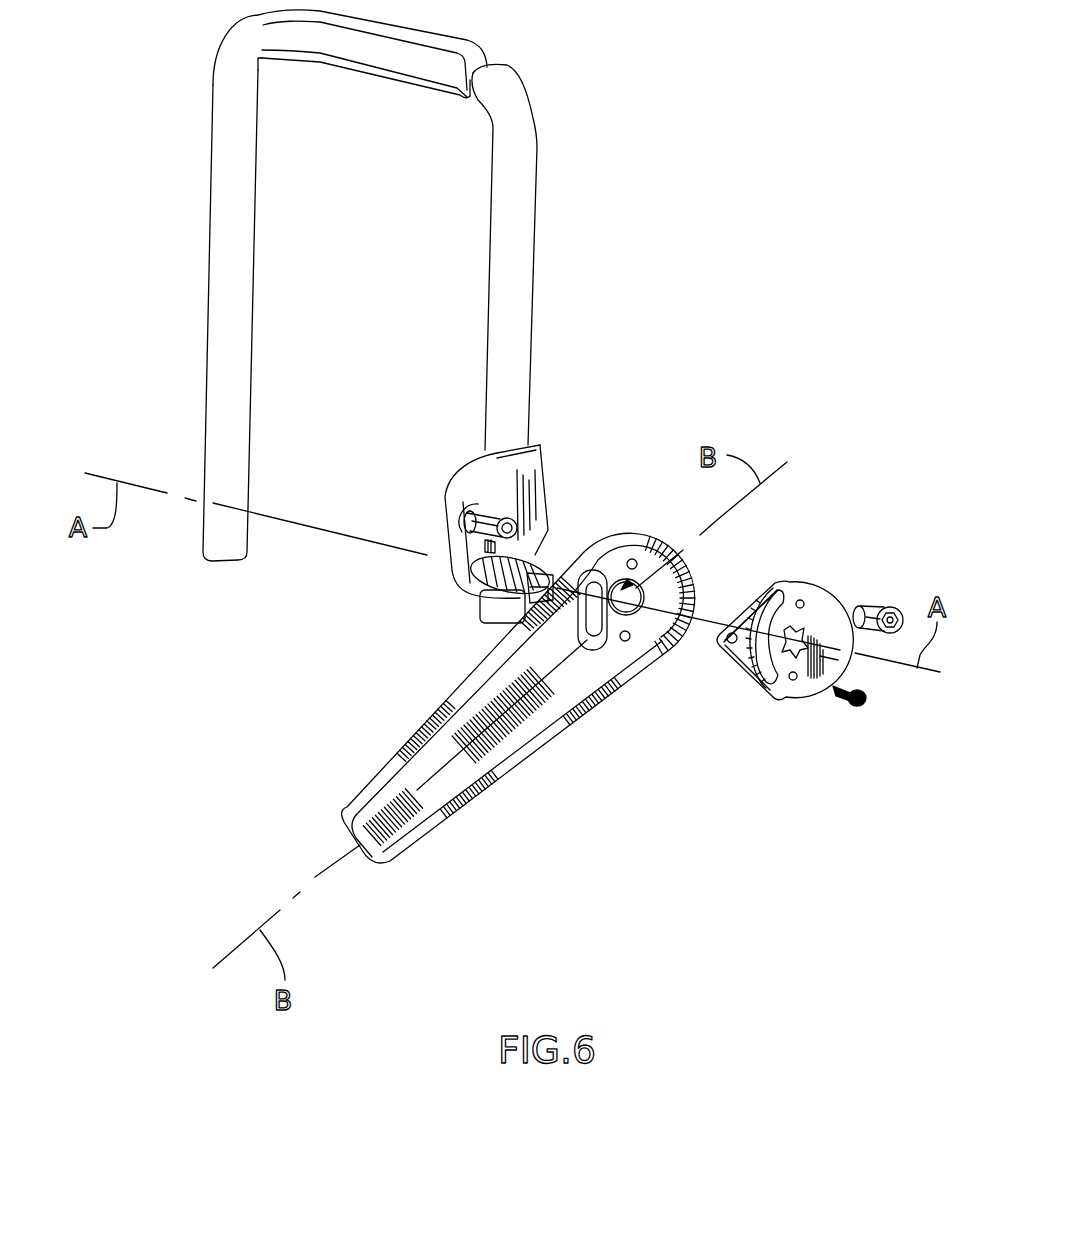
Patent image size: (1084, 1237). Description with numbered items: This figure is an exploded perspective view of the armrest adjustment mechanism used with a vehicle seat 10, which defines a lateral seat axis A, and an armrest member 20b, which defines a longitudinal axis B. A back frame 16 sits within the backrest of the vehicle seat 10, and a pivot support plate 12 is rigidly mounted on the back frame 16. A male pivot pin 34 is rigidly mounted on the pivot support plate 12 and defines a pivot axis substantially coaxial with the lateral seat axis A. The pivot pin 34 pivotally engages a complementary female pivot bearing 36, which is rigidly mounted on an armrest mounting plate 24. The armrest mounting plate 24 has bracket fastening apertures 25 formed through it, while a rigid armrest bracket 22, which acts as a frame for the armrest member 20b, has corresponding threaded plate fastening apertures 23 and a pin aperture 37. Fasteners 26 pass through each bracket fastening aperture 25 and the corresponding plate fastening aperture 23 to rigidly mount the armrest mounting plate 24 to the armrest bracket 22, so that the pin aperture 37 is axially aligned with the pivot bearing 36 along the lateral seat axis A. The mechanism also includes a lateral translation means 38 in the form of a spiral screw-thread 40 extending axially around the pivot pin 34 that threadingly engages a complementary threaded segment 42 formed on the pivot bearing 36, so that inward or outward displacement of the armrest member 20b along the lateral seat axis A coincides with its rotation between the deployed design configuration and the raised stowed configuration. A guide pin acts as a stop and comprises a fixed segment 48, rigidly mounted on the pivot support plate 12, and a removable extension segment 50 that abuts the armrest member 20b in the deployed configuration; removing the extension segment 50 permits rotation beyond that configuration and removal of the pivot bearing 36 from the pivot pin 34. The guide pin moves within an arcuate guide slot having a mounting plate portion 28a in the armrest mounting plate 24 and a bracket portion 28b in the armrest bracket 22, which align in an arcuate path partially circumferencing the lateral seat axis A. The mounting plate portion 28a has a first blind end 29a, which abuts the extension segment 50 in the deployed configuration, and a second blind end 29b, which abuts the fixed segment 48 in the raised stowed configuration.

The vehicle seat 10 is at (552, 116).
The back frame 16 is at (233, 96).
The pivot support plate 12 is at (502, 490).
The fixed segment 48 is at (480, 525).
The lateral translation means 38 is at (772, 360).
The spiral screw-thread 40 is at (535, 560).
The threaded segment 42 is at (845, 600).
The male pivot pin 34 is at (550, 562).
The pin aperture 37 is at (612, 535).
The bracket portion 28b is at (578, 621).
The plate fastening apertures 23 is at (629, 647).
The armrest bracket 22 is at (663, 660).
The armrest mounting plate 24 is at (785, 683).
The fasteners 26 is at (848, 705).
The armrest member 20b is at (688, 795).
The mounting plate portion 28a is at (764, 598).
The first blind end 29a is at (800, 600).
The second blind end 29b is at (732, 634).
The bracket fastening apertures 25 is at (806, 627).
The extension segment 50 is at (882, 606).
The female pivot bearing 36 is at (824, 657).